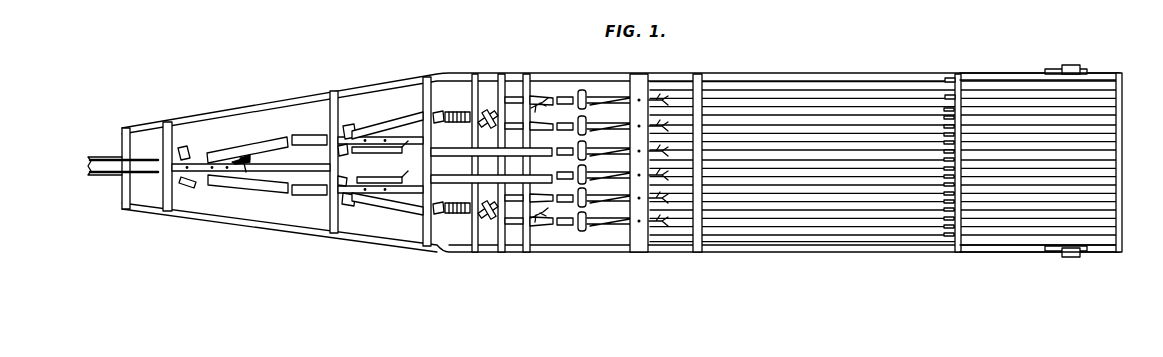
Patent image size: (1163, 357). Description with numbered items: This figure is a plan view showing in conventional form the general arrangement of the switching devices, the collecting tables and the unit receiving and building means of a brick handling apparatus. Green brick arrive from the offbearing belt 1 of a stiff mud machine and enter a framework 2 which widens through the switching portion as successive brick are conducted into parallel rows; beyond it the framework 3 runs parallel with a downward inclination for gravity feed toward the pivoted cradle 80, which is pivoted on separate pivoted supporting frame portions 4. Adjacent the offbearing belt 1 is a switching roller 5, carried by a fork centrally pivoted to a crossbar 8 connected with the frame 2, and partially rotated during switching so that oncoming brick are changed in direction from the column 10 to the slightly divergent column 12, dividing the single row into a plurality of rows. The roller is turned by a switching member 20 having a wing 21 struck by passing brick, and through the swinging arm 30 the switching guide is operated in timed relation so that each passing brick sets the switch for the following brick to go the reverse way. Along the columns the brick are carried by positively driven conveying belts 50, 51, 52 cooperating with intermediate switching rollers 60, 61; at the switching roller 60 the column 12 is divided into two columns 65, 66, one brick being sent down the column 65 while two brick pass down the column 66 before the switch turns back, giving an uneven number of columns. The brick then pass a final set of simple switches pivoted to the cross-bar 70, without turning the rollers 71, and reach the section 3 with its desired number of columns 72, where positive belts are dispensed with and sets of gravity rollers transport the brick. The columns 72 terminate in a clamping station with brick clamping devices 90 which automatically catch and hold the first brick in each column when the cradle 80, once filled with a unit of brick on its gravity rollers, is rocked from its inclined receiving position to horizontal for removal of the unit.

The offbearing belt 1 is at (123, 184).
The framework 2 is at (254, 104).
The framework section 3 is at (802, 163).
The pivoted supporting frame portions 4 is at (1100, 76).
The switching roller 5 is at (187, 147).
The crossbar 8 is at (1123, 133).
The column 10 is at (217, 152).
The column 12 is at (231, 182).
The switching member 20 is at (234, 160).
The wing 21 is at (243, 158).
The swinging arm 30 is at (947, 95).
The conveying belt 50 is at (303, 140).
The conveying belt 51 is at (415, 215).
The conveying belt 52 is at (457, 197).
The switching roller 60 is at (348, 201).
The switching roller 61 is at (490, 112).
The column 65 is at (393, 201).
The column 66 is at (373, 178).
The cross-bar 70 is at (640, 80).
The rollers 71 is at (582, 92).
The columns 72 is at (865, 185).
The pivoted cradle 80 is at (1031, 220).
The brick clamping devices 90 is at (948, 210).